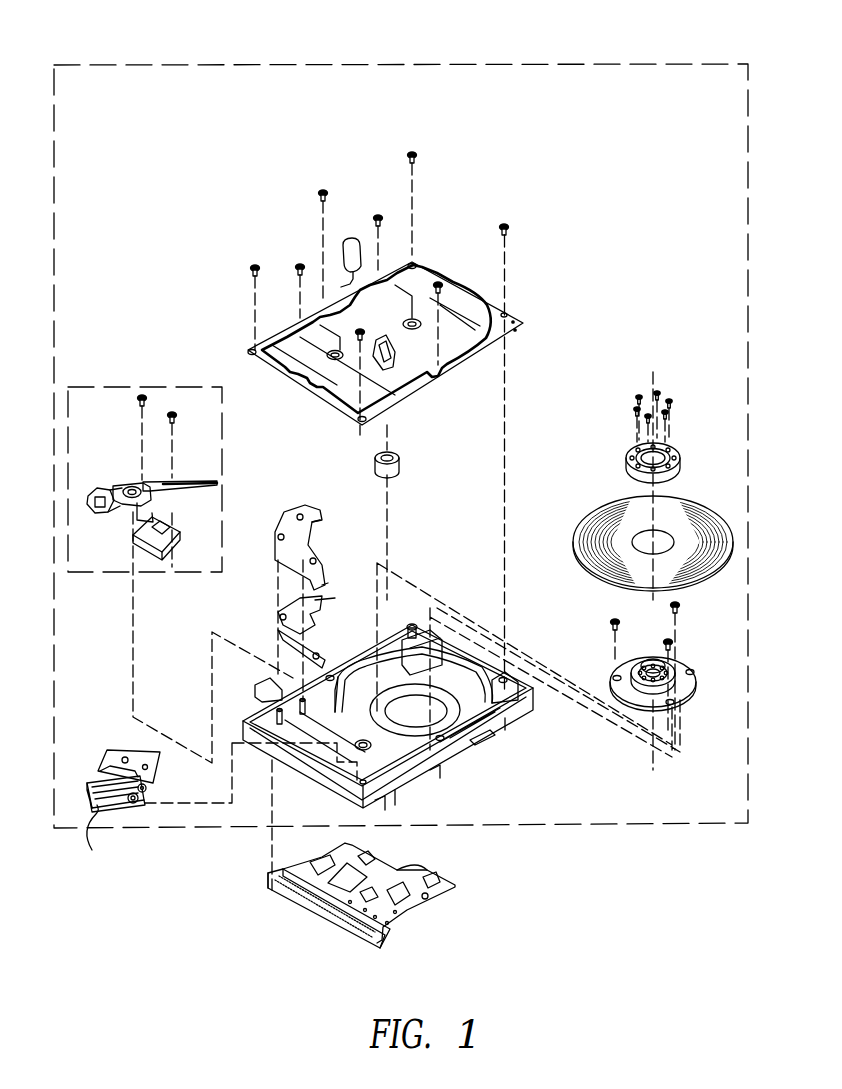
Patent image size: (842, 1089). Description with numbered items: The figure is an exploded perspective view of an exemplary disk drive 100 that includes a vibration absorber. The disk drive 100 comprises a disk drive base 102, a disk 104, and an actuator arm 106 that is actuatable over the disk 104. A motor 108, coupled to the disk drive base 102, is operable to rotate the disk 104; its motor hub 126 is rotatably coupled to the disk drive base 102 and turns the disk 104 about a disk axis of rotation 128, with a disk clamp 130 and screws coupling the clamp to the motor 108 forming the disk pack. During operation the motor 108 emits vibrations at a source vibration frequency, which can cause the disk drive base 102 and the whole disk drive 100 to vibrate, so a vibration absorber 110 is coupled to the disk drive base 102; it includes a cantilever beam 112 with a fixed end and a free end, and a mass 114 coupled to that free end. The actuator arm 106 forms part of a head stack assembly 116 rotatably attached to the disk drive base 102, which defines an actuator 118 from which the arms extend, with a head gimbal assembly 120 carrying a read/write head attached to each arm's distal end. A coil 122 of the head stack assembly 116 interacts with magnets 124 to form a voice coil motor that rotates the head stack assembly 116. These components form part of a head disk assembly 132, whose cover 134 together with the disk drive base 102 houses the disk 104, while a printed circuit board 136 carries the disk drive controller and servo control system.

The disk drive 100 is at (203, 42).
The disk drive base 102 is at (430, 778).
The disk 104 is at (600, 512).
The actuator arm 106 is at (157, 478).
The motor 108 is at (690, 678).
The vibration absorber 110 is at (104, 750).
The cantilever beam 112 is at (148, 778).
The mass 114 is at (74, 837).
The head stack assembly 116 is at (173, 386).
The actuator 118 is at (170, 506).
The head gimbal assembly 120 is at (207, 480).
The coil 122 is at (95, 507).
The magnets 124 is at (300, 632).
The motor hub 126 is at (640, 692).
The disk axis of rotation 128 is at (652, 374).
The disk clamp 130 is at (628, 455).
The head disk assembly 132 is at (441, 63).
The cover 134 is at (460, 347).
The printed circuit board 136 is at (435, 892).